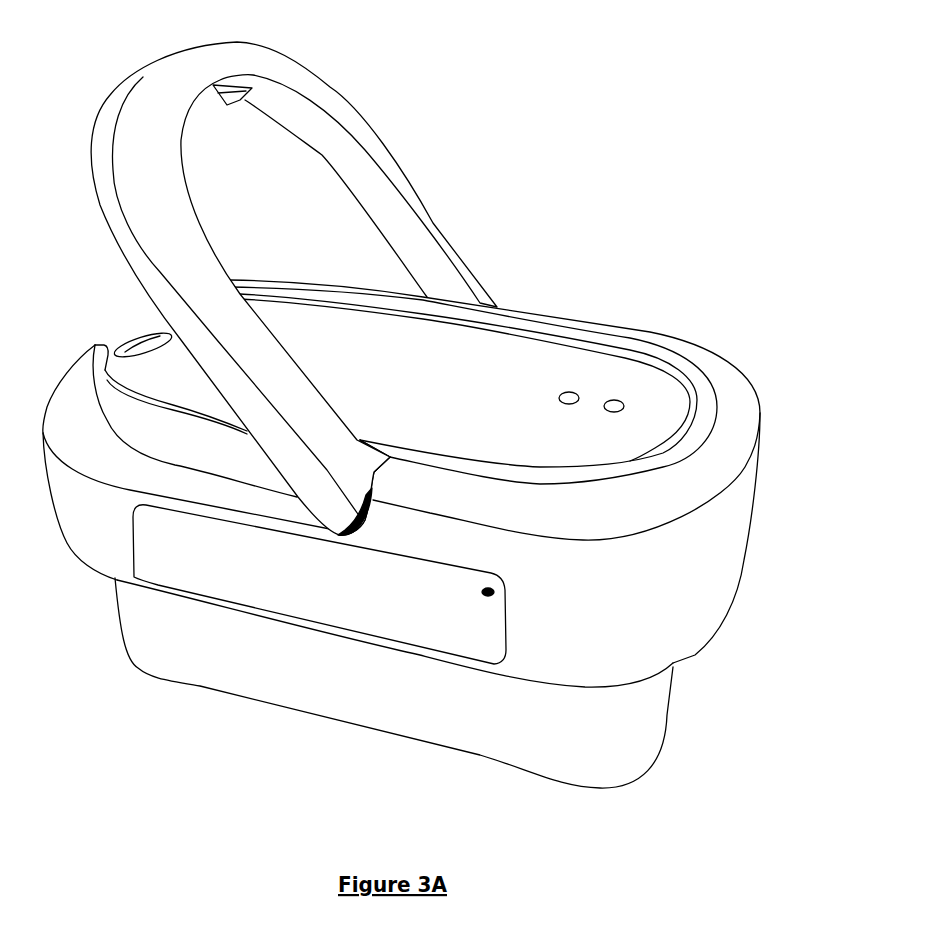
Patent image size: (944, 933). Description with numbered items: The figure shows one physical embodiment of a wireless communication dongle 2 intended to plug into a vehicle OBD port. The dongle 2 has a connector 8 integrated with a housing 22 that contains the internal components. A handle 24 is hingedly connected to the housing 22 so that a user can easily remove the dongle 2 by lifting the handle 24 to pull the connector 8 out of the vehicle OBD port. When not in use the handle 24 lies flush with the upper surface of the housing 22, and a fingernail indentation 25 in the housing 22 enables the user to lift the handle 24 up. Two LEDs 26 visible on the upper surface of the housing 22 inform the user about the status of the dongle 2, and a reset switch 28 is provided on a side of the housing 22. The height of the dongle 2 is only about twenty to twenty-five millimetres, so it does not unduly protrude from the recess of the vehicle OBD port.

The dongle 2 is at (432, 415).
The connector 8 is at (657, 737).
The housing 22 is at (717, 525).
The handle 24 is at (410, 235).
The fingernail indentation 25 is at (145, 343).
The LEDs 26 is at (567, 392).
The reset switch 28 is at (497, 592).